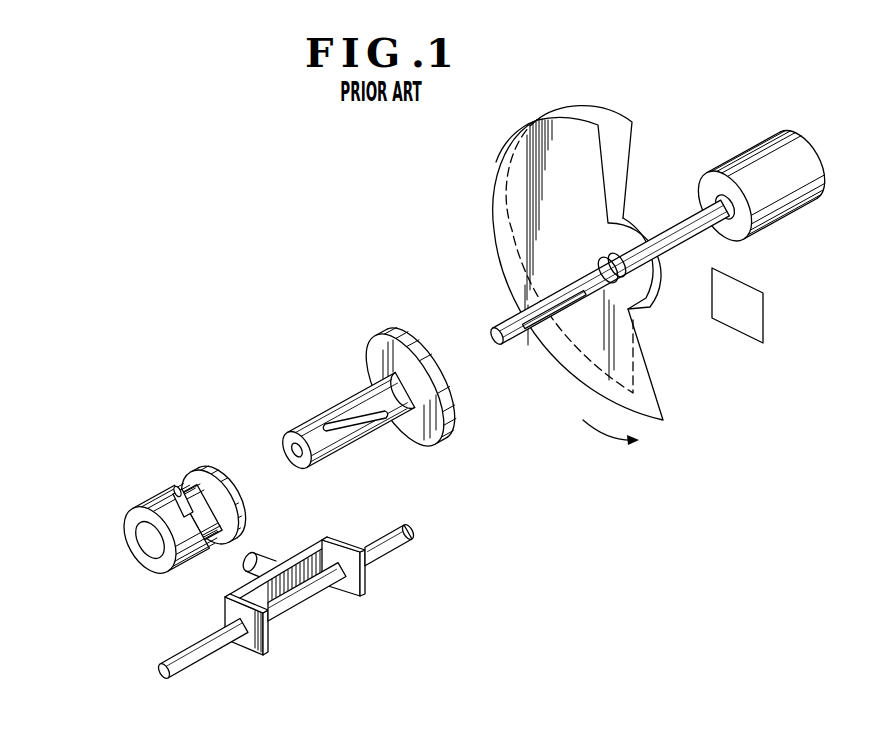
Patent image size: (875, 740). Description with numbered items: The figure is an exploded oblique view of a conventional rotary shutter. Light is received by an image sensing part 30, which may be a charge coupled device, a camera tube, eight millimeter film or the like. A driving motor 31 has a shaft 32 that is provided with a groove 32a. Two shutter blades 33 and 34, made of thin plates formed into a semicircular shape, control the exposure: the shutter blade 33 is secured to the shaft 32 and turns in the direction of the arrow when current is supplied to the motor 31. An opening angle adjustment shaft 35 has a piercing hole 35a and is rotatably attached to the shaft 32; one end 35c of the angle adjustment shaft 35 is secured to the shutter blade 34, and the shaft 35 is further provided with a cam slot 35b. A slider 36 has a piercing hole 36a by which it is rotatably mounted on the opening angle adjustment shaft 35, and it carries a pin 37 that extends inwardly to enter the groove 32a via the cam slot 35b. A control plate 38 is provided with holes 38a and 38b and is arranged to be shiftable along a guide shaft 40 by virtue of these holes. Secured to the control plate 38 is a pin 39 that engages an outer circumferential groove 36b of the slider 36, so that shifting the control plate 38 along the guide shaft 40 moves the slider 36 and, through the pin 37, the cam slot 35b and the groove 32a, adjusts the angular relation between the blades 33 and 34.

The image sensing part 30 is at (763, 297).
The driving motor 31 is at (782, 212).
The shaft 32 is at (678, 226).
The groove 32a is at (527, 333).
The shutter blade 33 is at (617, 118).
The shutter blade 34 is at (537, 122).
The opening angle adjustment shaft 35 is at (365, 407).
The piercing hole 35a is at (288, 452).
The cam slot 35b is at (347, 432).
The end of the angle adjustment shaft 35c is at (383, 334).
The slider 36 is at (160, 494).
The piercing hole 36a is at (143, 545).
The outer circumferential groove 36b is at (194, 476).
The pin 37 is at (200, 520).
The control plate 38 is at (367, 583).
The hole 38a is at (253, 645).
The hole 38b is at (342, 585).
The pin 39 is at (262, 556).
The guide shaft 40 is at (415, 540).